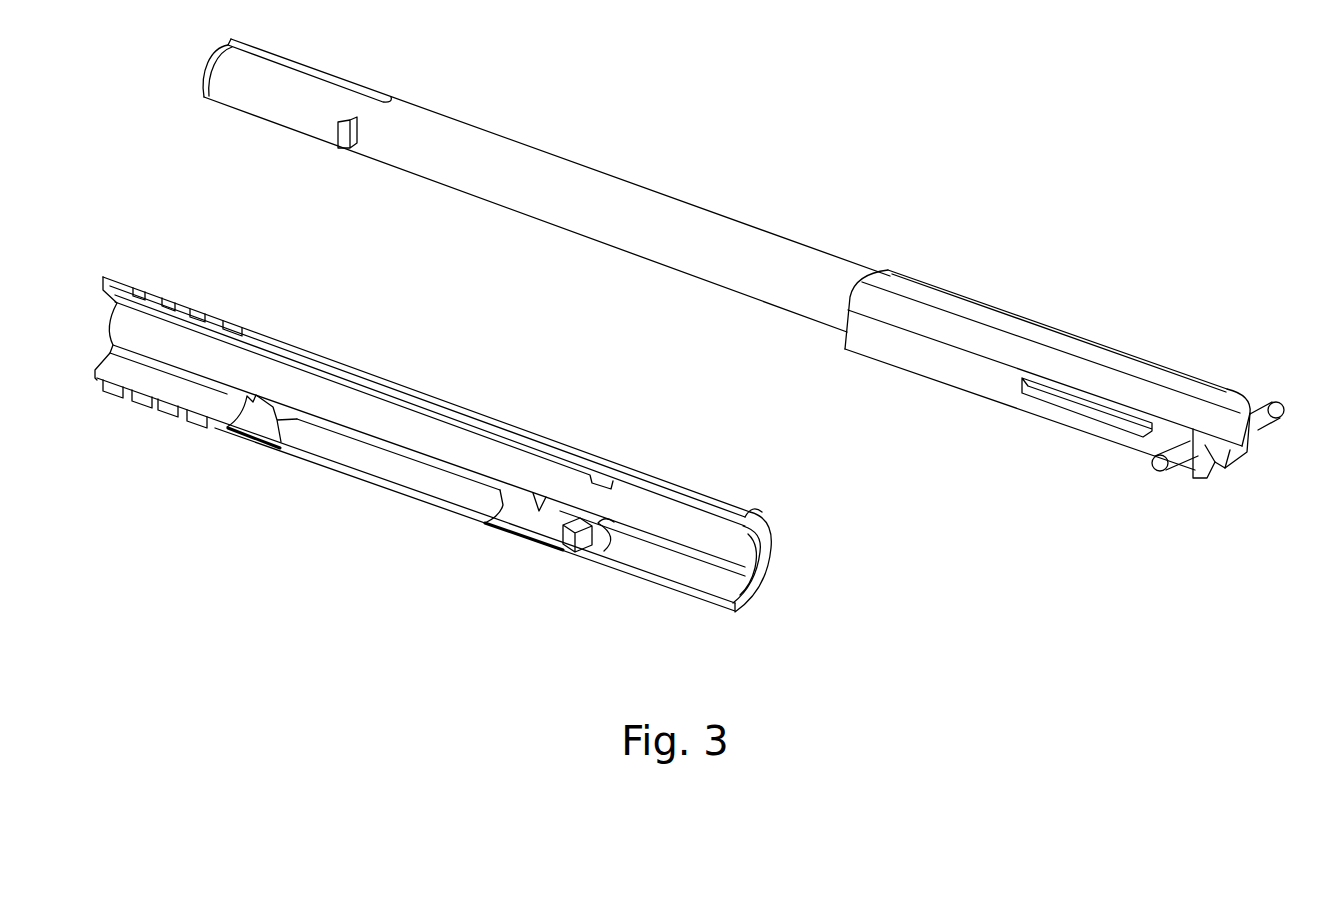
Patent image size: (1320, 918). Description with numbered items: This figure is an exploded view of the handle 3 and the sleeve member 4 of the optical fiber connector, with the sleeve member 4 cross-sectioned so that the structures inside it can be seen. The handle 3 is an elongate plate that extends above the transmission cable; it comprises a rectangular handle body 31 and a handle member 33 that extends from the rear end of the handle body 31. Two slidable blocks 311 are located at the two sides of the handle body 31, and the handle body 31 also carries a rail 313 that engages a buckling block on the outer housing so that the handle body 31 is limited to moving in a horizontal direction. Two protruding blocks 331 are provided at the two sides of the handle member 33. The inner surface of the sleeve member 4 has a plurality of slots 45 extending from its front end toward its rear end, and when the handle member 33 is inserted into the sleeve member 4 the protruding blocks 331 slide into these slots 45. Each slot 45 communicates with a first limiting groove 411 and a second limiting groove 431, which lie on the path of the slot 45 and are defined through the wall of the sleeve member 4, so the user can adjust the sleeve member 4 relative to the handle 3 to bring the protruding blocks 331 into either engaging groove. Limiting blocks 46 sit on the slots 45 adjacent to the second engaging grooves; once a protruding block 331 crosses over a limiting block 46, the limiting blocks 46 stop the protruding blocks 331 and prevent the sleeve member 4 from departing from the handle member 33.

The handle 3 is at (743, 298).
The handle body 31 is at (1046, 330).
The slidable blocks 311 is at (1160, 463).
The rail 313 is at (1218, 455).
The handle member 33 is at (645, 196).
The protruding blocks 331 is at (347, 148).
The sleeve member 4 is at (433, 468).
The first limiting groove 411 is at (255, 430).
The second limiting groove 431 is at (530, 524).
The slots 45 is at (377, 470).
The limiting blocks 46 is at (598, 547).